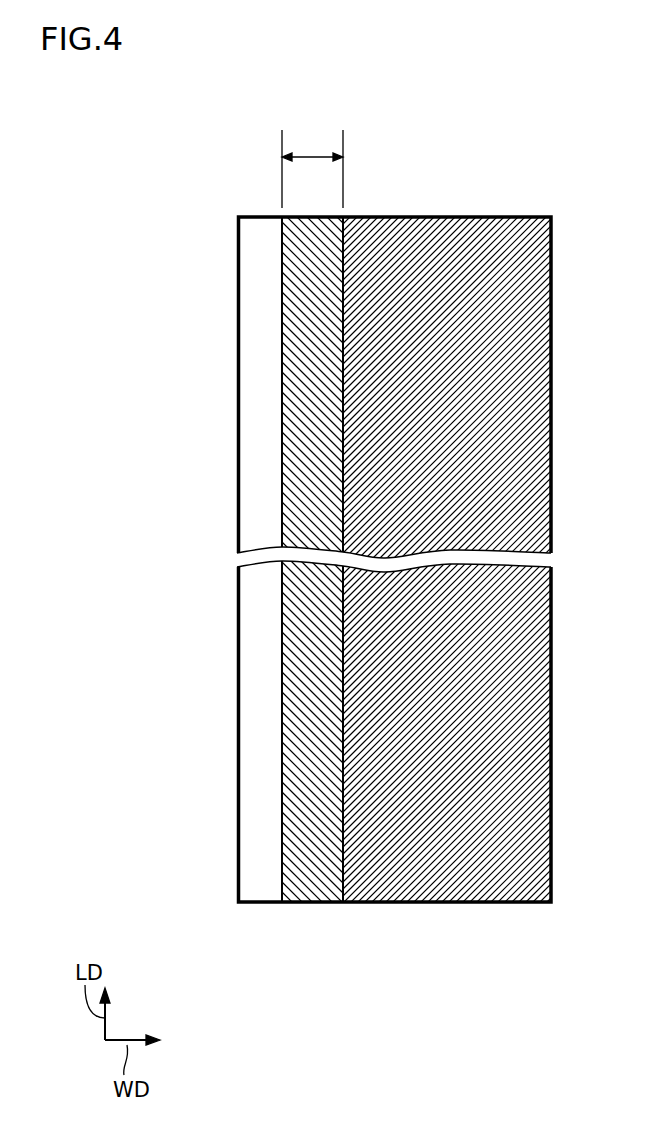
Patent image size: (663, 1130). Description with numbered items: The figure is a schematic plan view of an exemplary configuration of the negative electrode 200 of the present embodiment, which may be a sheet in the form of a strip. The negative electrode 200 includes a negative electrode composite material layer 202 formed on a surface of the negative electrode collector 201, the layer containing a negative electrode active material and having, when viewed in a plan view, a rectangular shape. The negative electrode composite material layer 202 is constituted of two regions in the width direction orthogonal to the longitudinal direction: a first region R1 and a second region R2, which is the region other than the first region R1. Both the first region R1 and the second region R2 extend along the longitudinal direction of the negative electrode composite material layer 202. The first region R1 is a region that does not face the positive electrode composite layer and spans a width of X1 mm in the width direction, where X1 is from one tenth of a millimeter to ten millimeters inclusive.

The negative electrode 200 is at (394, 557).
The negative electrode collector 201 is at (260, 892).
The negative electrode composite material layer 202 is at (416, 557).
The first region R1 is at (312, 892).
The second region R2 is at (447, 557).
The width of first region X1 is at (312, 166).